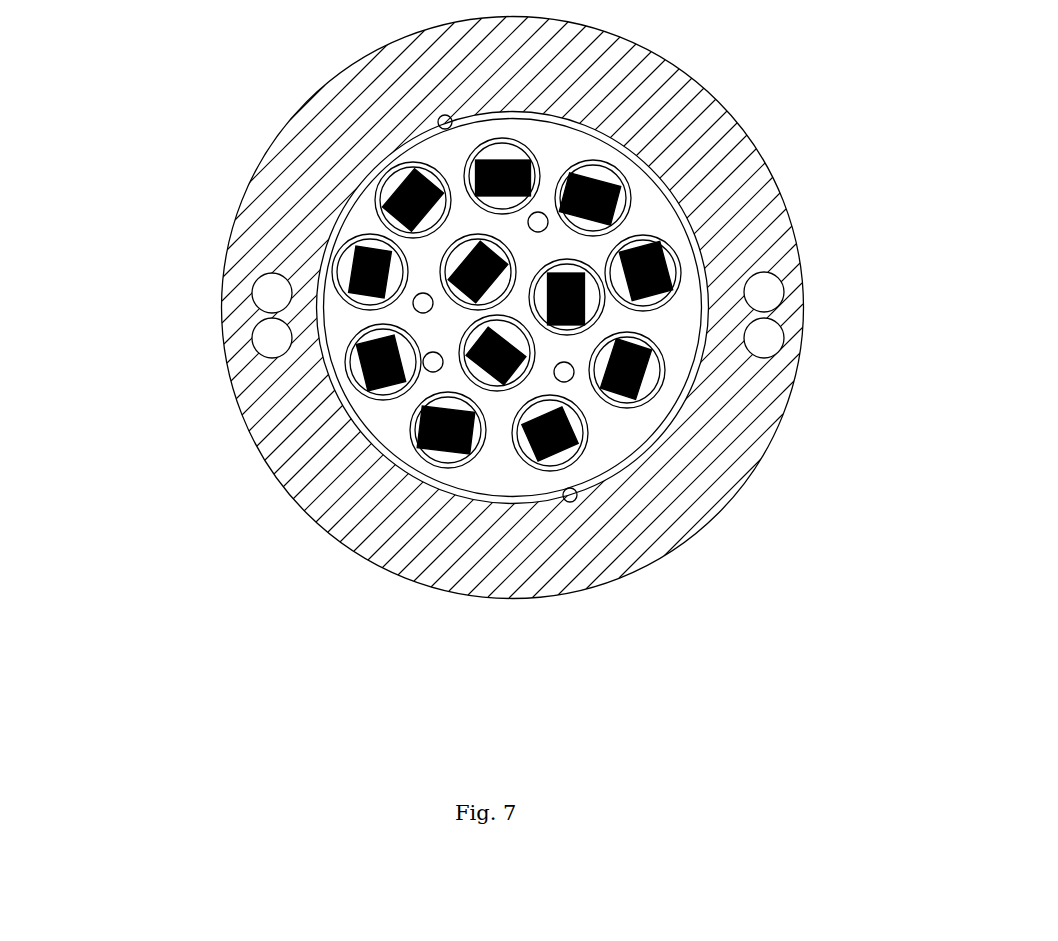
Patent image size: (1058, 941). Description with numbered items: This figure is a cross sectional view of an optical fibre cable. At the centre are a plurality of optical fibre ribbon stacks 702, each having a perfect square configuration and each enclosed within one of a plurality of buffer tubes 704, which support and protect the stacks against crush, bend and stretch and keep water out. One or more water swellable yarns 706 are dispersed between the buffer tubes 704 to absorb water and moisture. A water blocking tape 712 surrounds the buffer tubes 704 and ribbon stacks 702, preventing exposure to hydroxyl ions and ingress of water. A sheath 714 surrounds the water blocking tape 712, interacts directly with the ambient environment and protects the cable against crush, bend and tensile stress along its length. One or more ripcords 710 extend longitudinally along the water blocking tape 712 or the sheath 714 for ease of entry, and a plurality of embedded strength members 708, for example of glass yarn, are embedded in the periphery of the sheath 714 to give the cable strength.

The optical fibre ribbon stacks 702 is at (655, 280).
The buffer tubes 704 is at (655, 390).
The water swellable yarns 706 is at (567, 382).
The embedded strength members 708 is at (272, 294).
The ripcords 710 is at (438, 124).
The water blocking tape 712 is at (322, 350).
The sheath 714 is at (315, 402).